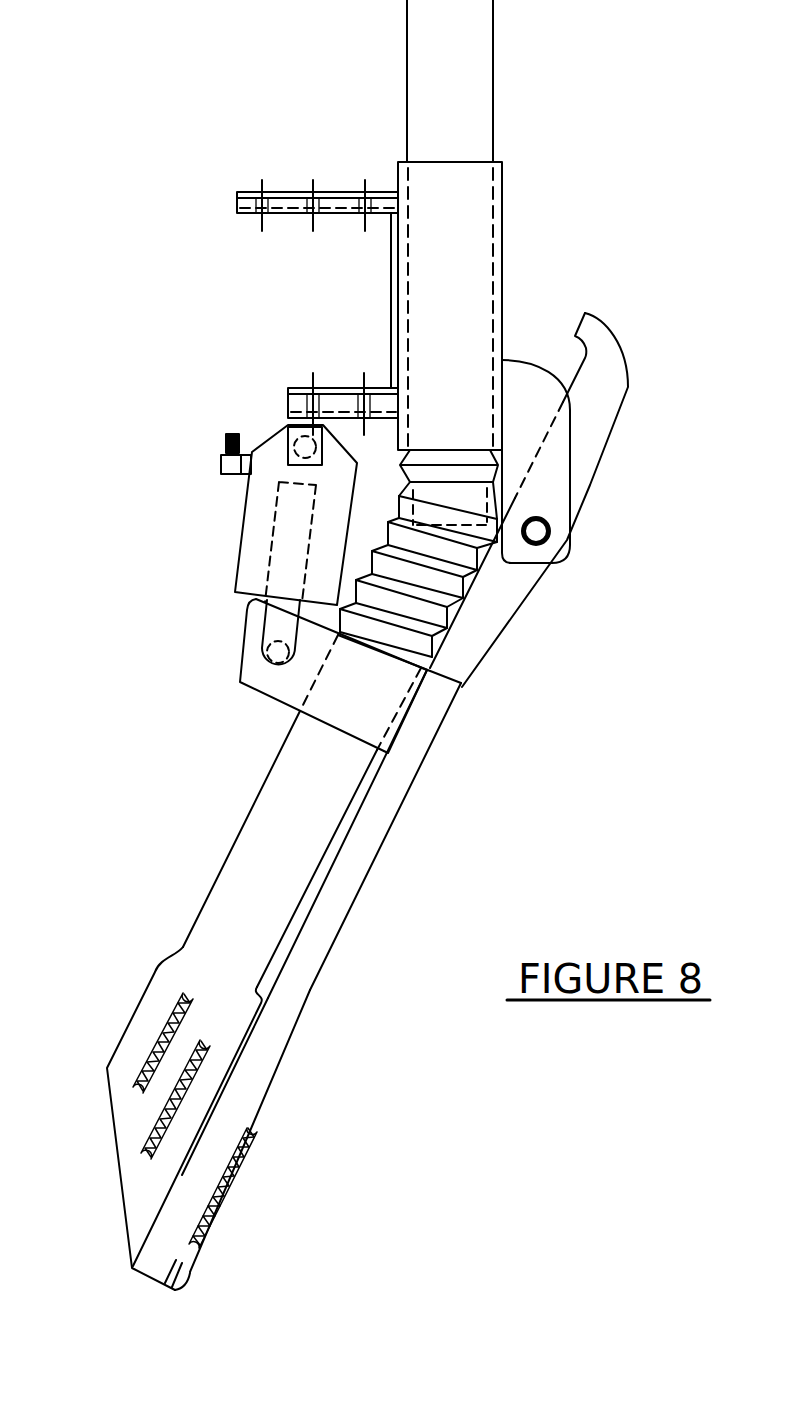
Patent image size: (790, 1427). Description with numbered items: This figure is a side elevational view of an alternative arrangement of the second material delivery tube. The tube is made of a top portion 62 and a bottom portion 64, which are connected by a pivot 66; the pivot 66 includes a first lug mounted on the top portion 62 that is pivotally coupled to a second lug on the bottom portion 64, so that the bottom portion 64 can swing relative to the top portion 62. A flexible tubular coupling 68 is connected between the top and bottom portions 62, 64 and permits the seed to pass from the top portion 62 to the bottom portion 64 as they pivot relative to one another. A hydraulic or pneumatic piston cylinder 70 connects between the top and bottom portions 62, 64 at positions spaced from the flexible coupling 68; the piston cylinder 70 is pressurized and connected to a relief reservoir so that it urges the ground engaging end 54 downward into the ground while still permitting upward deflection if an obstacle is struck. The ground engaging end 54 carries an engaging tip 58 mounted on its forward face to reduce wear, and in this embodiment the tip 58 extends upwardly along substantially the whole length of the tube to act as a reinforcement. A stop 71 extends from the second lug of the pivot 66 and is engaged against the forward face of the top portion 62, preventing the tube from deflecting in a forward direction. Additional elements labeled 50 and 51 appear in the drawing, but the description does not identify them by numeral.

The housing 50 is at (460, 245).
The mounting bracket 51 is at (247, 213).
The ground engaging end 54 is at (130, 1128).
The engaging tip 58 is at (197, 1262).
The top portion 62 is at (463, 65).
The bottom portion 64 is at (303, 847).
The pivot 66 is at (540, 531).
The flexible tubular coupling 68 is at (447, 613).
The piston cylinder 70 is at (268, 537).
The stop 71 is at (600, 373).